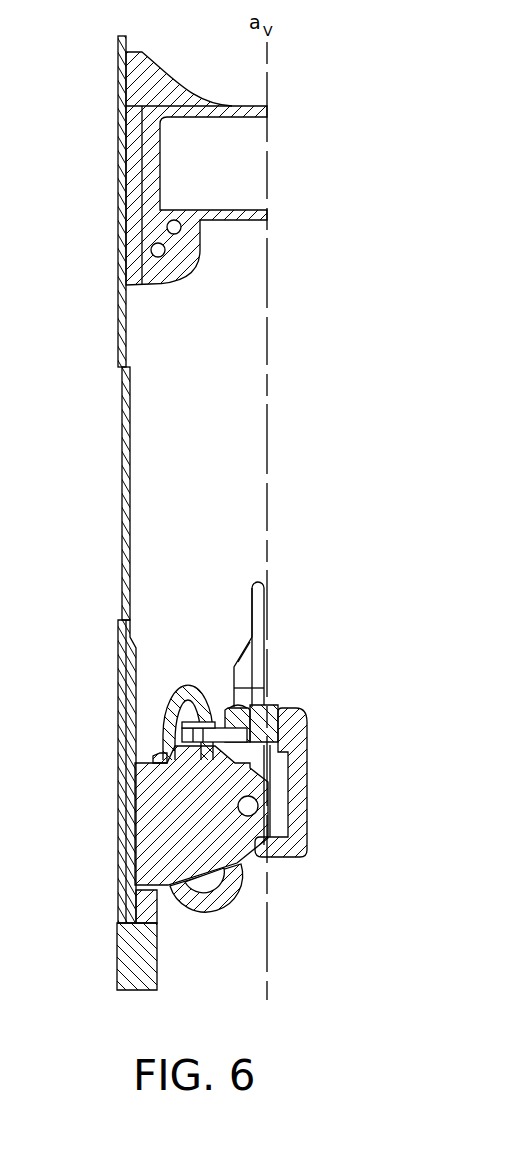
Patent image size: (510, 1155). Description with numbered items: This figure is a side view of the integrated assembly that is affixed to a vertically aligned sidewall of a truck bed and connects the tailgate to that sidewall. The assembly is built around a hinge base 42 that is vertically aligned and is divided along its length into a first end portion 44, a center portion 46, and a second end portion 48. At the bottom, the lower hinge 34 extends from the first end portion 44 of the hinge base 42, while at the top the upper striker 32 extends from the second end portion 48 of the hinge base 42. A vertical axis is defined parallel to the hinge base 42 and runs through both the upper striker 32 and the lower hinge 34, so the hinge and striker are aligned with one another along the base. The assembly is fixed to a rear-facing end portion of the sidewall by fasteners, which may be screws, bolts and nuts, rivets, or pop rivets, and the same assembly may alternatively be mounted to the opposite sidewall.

The upper striker 32 is at (118, 143).
The lower hinge 34 is at (118, 828).
The hinge base 42 is at (91, 513).
The first end portion 44 is at (122, 622).
The center portion 46 is at (122, 526).
The second end portion 48 is at (122, 375).